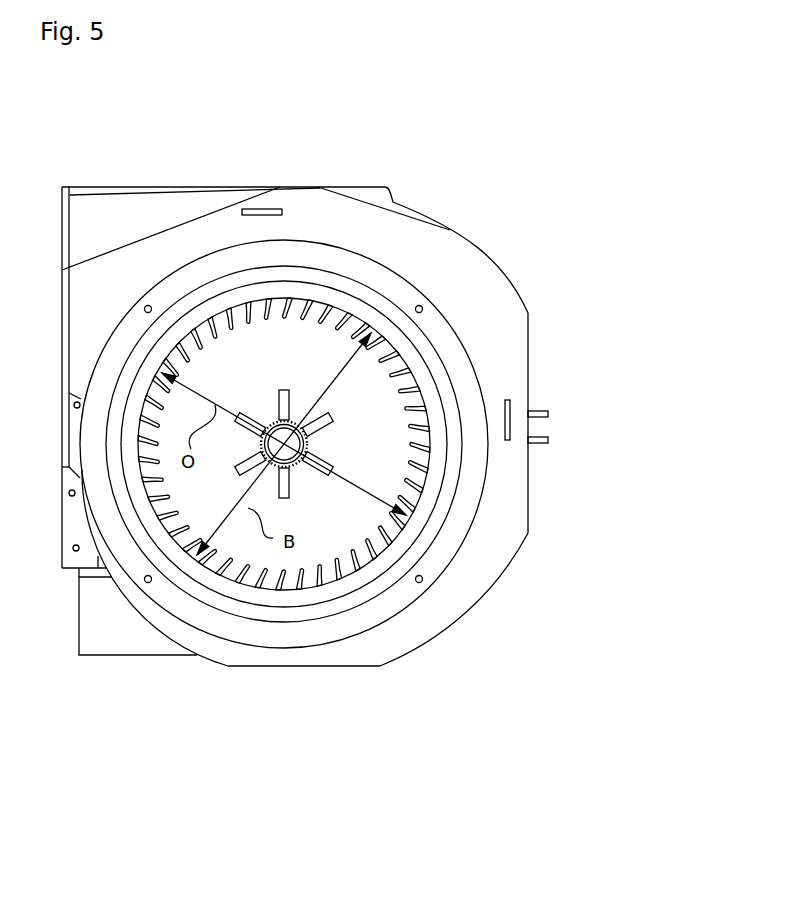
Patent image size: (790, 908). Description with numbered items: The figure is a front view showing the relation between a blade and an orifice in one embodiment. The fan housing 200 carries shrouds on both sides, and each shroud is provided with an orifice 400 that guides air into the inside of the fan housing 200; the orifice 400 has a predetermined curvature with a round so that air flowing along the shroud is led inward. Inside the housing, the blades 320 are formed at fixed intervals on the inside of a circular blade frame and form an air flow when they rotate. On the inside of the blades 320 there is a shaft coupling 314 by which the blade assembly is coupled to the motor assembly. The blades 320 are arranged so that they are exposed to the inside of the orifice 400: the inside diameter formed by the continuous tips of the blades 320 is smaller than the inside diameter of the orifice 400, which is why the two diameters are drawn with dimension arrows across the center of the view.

The fan housing 200 is at (313, 217).
The shaft coupling 314 is at (307, 444).
The blades 320 is at (373, 547).
The orifice 400 is at (209, 597).